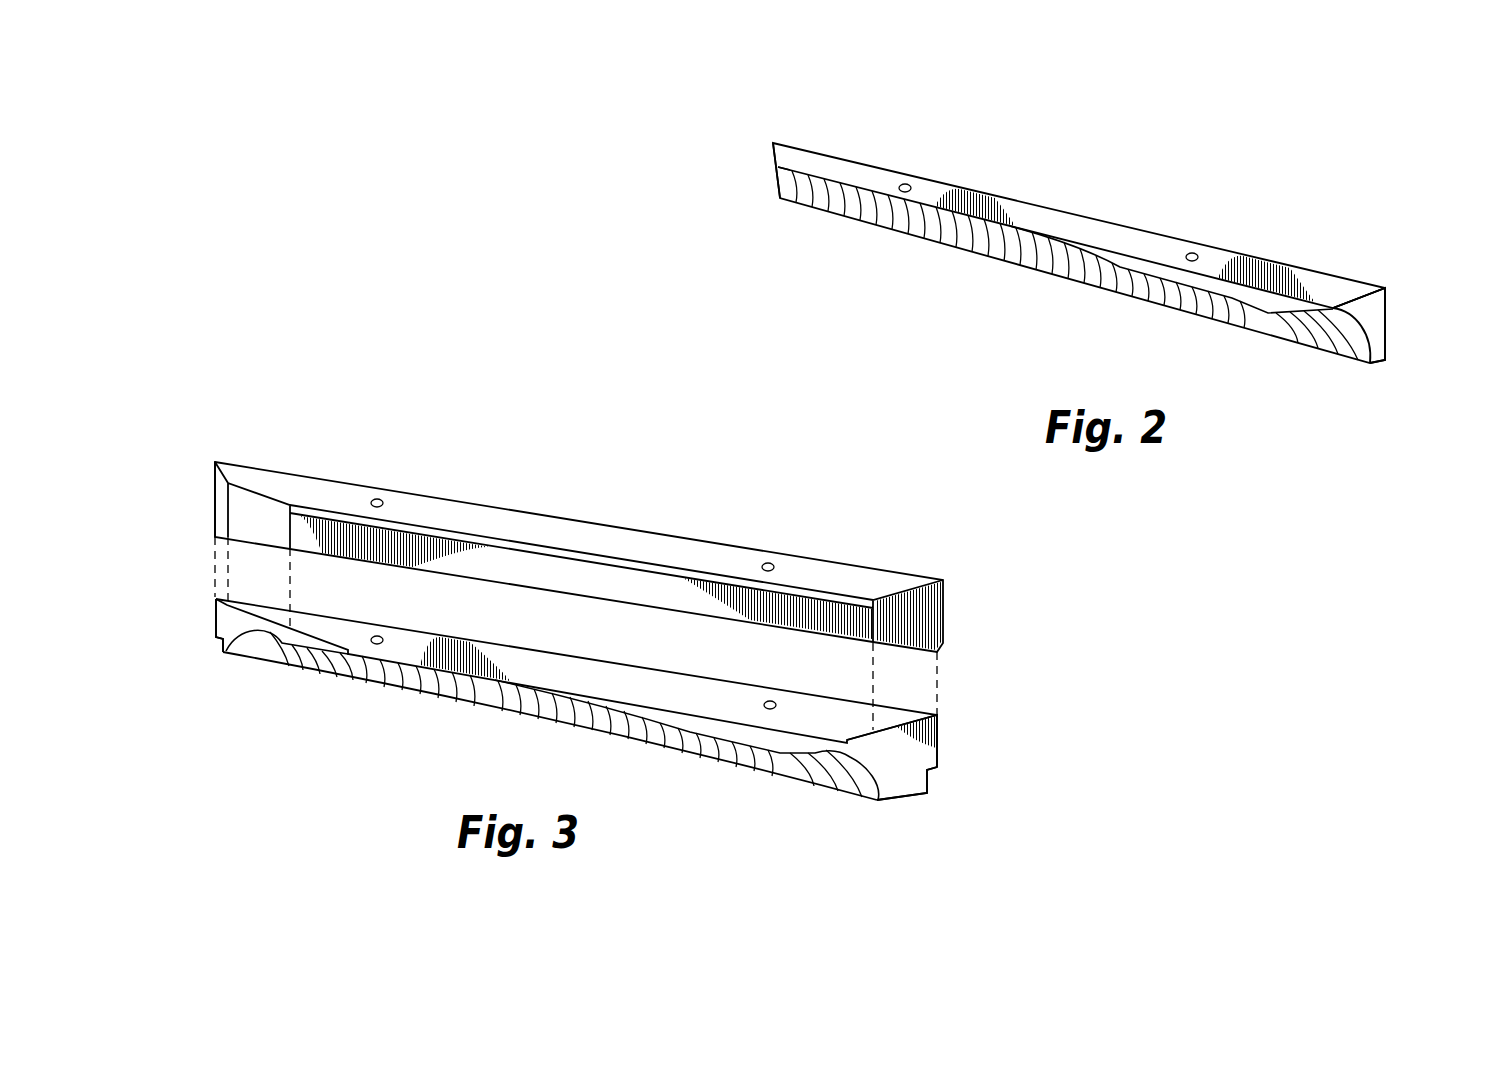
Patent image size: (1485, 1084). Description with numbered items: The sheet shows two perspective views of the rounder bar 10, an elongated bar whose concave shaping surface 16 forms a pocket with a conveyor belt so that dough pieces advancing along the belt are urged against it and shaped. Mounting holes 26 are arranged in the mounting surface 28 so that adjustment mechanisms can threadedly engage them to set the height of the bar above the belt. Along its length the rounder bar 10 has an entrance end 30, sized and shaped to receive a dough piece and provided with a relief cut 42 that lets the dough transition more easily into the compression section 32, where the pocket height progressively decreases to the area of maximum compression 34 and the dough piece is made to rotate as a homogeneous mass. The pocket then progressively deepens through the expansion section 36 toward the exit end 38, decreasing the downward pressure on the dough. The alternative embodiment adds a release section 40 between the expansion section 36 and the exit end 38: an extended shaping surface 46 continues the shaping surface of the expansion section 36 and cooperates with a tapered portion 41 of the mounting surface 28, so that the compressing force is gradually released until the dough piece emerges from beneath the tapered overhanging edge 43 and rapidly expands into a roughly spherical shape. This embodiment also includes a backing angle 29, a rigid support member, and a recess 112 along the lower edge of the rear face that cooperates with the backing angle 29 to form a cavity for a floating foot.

In FIG. 2, the rounder bar 10 is at (1085, 227).
In FIG. 2, the shaping surface 16 is at (1077, 268).
In FIG. 3, the shaping surface 16 is at (705, 750).
In FIG. 2, the mounting holes 26 is at (911, 186).
In FIG. 2, the mounting surface 28 is at (1056, 218).
In FIG. 3, the backing angle 29 is at (828, 573).
In FIG. 2, the entrance end 30 is at (1378, 316).
In FIG. 2, the compression section 32 is at (1332, 342).
In FIG. 2, the area of maximum compression 34 is at (1273, 325).
In FIG. 2, the expansion section 36 is at (1000, 246).
In FIG. 3, the expansion section 36 is at (568, 723).
In FIG. 2, the exit end 38 is at (762, 189).
In FIG. 3, the exit end 38 is at (211, 629).
In FIG. 3, the release section 40 is at (297, 655).
In FIG. 3, the tapered portion 41 is at (325, 628).
In FIG. 2, the relief cut 42 is at (1390, 297).
In FIG. 3, the relief cut 42 is at (938, 748).
In FIG. 3, the overhanging edge 43 is at (318, 643).
In FIG. 3, the extended shaping surface 46 is at (258, 655).
In FIG. 3, the recess 112 is at (935, 777).